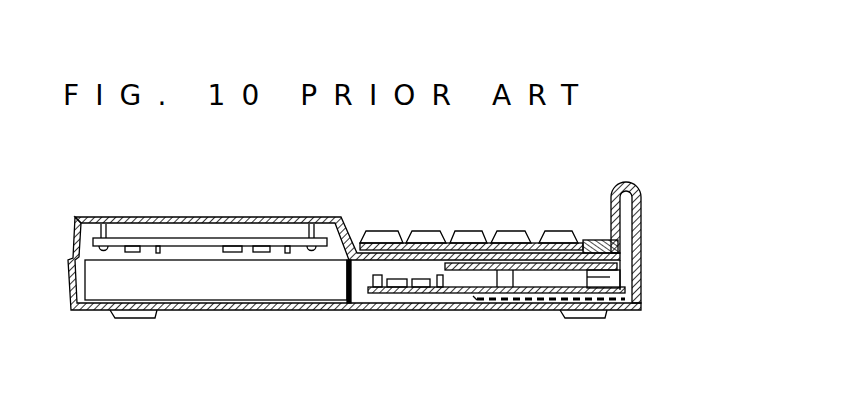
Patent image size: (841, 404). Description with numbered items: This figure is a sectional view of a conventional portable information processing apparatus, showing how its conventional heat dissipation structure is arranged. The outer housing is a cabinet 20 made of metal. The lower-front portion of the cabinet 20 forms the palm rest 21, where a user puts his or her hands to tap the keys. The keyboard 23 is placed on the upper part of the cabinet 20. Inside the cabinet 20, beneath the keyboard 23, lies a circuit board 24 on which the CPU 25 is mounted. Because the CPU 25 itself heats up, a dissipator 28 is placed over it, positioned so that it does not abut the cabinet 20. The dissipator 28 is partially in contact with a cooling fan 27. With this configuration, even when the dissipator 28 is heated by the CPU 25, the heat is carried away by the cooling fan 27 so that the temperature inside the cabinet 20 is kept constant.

The cabinet 20 is at (297, 216).
The palm rest 21 is at (157, 216).
The keyboard 23 is at (465, 229).
The circuit board 24 is at (417, 293).
The CPU 25 is at (600, 277).
The cooling fan 27 is at (468, 312).
The dissipator 28 is at (620, 268).